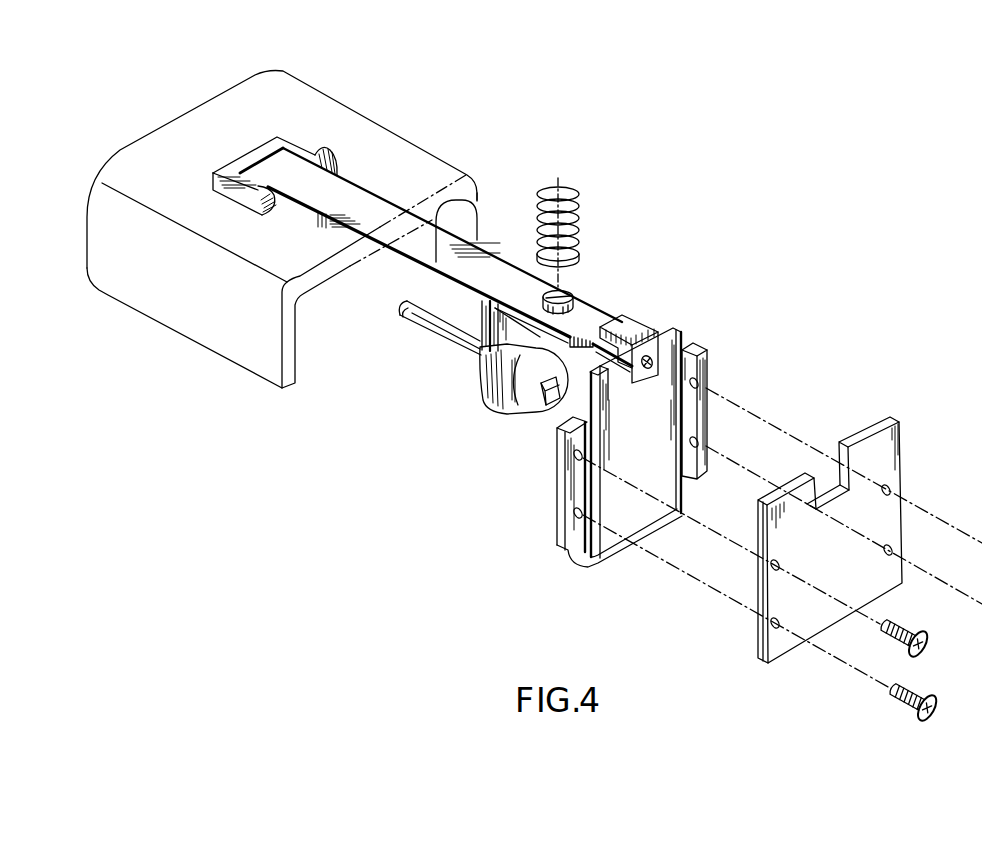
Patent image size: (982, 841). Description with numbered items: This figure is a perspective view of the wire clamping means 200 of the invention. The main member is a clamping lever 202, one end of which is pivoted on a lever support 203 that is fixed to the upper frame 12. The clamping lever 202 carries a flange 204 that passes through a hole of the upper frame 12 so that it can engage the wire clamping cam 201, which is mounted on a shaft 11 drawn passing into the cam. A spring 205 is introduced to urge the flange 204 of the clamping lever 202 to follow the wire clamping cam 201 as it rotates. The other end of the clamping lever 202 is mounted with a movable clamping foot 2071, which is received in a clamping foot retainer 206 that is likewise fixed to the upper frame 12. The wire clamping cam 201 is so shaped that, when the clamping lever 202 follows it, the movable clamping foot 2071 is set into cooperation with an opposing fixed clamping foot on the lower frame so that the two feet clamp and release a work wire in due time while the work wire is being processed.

The upper frame 12 is at (318, 103).
The lever support 203 is at (310, 152).
The clamping lever 202 is at (392, 215).
The spring 205 is at (580, 222).
The wire clamping means 200 is at (670, 250).
The rod 11 is at (417, 330).
The flange 204 is at (487, 358).
The wire clamping cam 201 is at (487, 380).
The movable clamping foot 2071 is at (682, 498).
The clamping foot retainer 206 is at (703, 383).